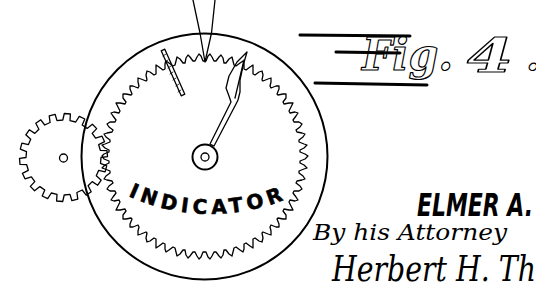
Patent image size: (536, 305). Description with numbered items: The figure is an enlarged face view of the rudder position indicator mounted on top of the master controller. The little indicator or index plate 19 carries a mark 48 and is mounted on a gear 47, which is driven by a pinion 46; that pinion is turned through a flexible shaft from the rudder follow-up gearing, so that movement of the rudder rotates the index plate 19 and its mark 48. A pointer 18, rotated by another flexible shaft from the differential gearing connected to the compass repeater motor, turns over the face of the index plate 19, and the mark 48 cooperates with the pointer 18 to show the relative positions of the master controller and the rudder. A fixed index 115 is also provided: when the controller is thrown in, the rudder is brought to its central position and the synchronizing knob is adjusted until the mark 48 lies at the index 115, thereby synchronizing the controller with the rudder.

The pointer 18 is at (227, 111).
The index plate 19 is at (326, 132).
The pinion 46 is at (64, 158).
The gear 47 is at (127, 97).
The mark 48 is at (164, 51).
The index 115 is at (208, 9).